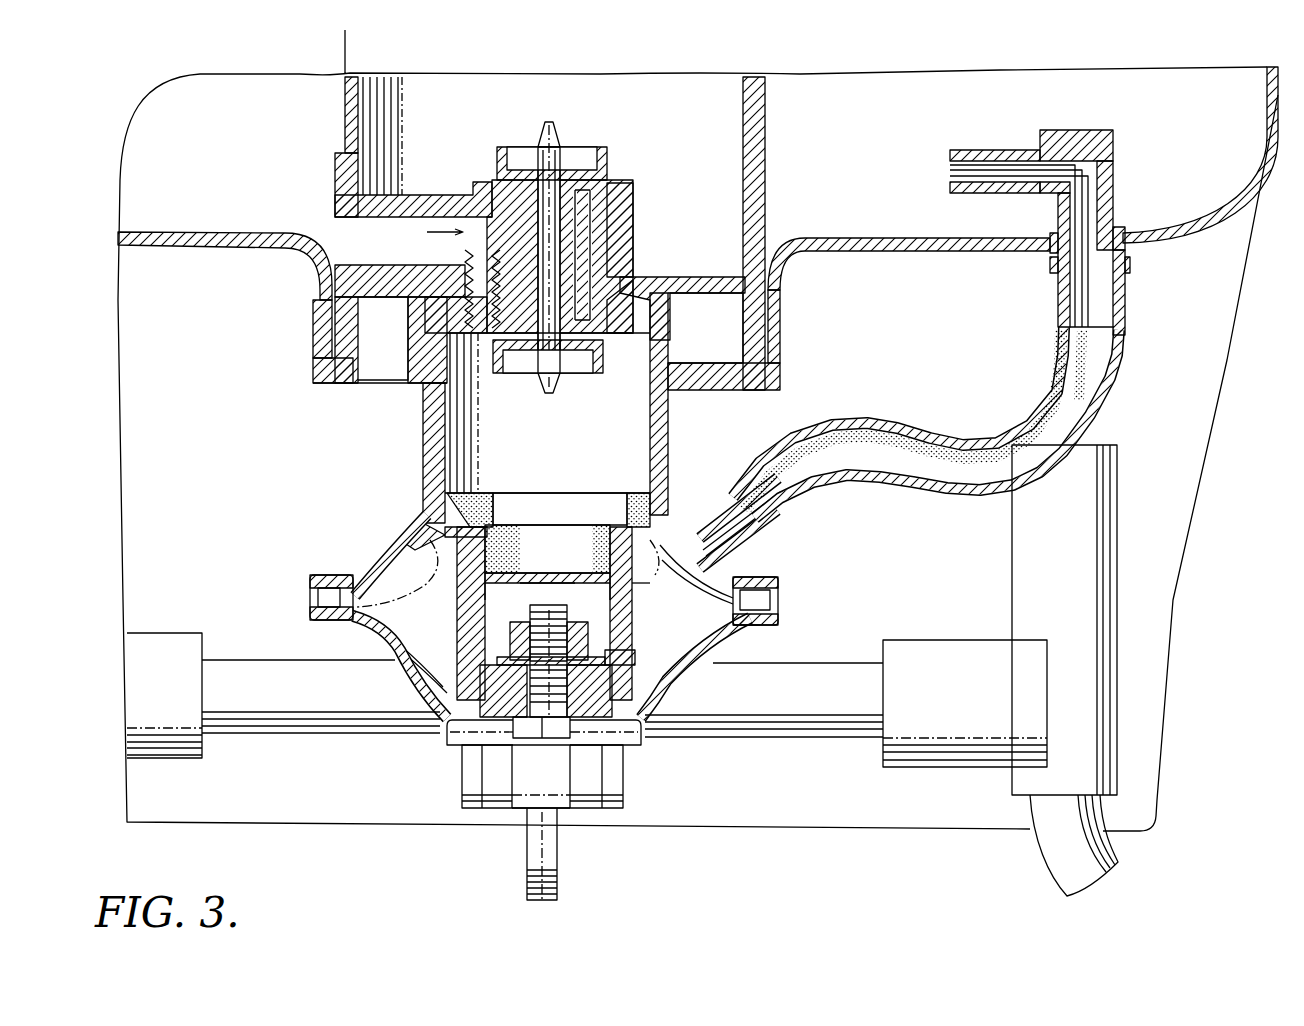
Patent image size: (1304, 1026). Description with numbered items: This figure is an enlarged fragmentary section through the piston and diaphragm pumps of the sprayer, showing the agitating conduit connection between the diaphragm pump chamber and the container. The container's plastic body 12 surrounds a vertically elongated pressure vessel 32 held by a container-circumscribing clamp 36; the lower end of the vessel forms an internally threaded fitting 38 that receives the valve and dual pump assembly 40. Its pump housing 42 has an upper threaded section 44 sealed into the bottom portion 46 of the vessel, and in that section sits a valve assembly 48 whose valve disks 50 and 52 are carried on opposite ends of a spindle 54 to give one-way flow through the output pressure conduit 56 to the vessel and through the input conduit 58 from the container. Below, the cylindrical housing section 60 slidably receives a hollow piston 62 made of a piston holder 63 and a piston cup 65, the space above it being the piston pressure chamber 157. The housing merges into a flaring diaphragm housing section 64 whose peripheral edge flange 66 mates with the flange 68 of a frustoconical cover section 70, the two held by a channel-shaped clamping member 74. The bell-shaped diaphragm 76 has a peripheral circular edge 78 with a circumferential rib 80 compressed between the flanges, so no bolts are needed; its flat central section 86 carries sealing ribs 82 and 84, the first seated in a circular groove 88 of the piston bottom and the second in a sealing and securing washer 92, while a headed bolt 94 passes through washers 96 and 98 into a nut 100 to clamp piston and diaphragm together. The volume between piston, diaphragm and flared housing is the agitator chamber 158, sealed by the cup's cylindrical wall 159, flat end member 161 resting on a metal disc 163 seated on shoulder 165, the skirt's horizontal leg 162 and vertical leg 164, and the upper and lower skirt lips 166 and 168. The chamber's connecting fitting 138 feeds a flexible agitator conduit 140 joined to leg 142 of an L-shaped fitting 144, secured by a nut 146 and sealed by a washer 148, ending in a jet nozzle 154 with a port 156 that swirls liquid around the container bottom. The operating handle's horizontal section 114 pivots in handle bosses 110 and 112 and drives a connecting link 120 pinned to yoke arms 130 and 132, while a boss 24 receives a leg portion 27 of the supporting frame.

The plastic body 12 is at (847, 240).
The boss 24 is at (1117, 767).
The leg portion 27 is at (1035, 810).
The pressure vessel 32 is at (766, 196).
The clamp 36 is at (782, 325).
The fitting 38 is at (655, 206).
The valve and dual pump assembly 40 is at (652, 288).
The pump housing 42 is at (412, 429).
The threaded section 44 is at (616, 250).
The bottom portion 46 is at (618, 196).
The valve assembly 48 is at (480, 165).
The valve disk 50 is at (608, 174).
The valve disk 52 is at (488, 345).
The spindle 54 is at (592, 215).
The output pressure conduit 56 is at (603, 345).
The input conduit 58 is at (490, 315).
The cylindrical housing section 60 is at (669, 428).
The piston 62 is at (453, 592).
The piston holder 63 is at (460, 625).
The diaphragm housing section 64 is at (380, 565).
The piston cup 65 is at (612, 530).
The peripheral edge flange 66 is at (778, 586).
The peripheral edge flange 68 is at (760, 626).
The cover section 70 is at (677, 693).
The clamping member 74 is at (779, 603).
The diaphragm 76 is at (400, 632).
The peripheral circular edge 78 is at (310, 600).
The circumferential rib 80 is at (330, 585).
The sealing rib 82 is at (585, 695).
The sealing rib 84 is at (632, 750).
The central section 86 is at (485, 712).
The circular groove 88 is at (500, 690).
The sealing and securing washer 92 is at (607, 712).
The headed bolt 94 is at (570, 625).
The washer 96 is at (614, 663).
The washer 98 is at (497, 660).
The nut 100 is at (508, 636).
The handle boss 110 is at (176, 758).
The handle boss 112 is at (945, 769).
The horizontal section 114 is at (298, 738).
The connecting link 120 is at (527, 862).
The arm 130 is at (482, 772).
The arm 132 is at (600, 790).
The connecting fitting 138 is at (735, 490).
The agitator conduit 140 is at (866, 485).
The leg 142 is at (1126, 306).
The L-shaped fitting 144 is at (1142, 151).
The nut 146 is at (1050, 265).
The washer 148 is at (1050, 236).
The jet nozzle 154 is at (1012, 150).
The input/output port 156 is at (955, 184).
The piston pressure chamber 157 is at (562, 438).
The agitator chamber 158 is at (672, 639).
The circular cylindrical wall 159 is at (547, 549).
The end member 161 is at (547, 565).
The horizontal leg 162 is at (492, 525).
The metal disc 163 is at (549, 586).
The vertical leg 164 is at (425, 534).
The shoulder 165 is at (492, 586).
The skirt lip 166 is at (445, 503).
The skirt lip 168 is at (641, 592).